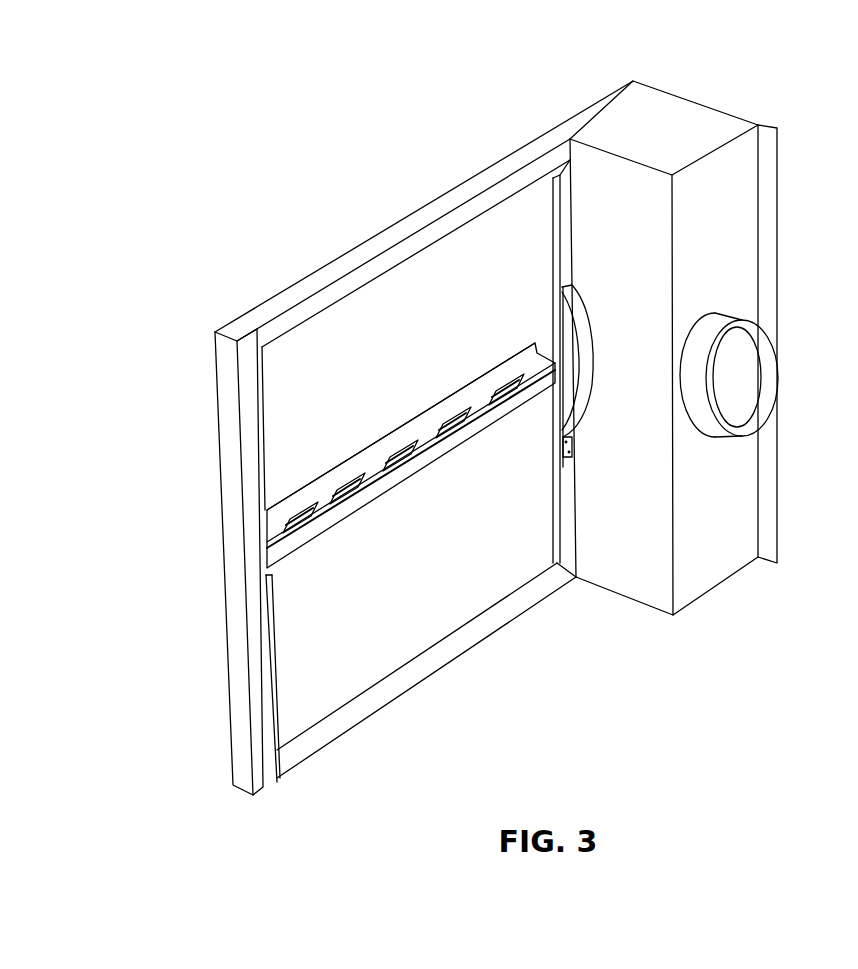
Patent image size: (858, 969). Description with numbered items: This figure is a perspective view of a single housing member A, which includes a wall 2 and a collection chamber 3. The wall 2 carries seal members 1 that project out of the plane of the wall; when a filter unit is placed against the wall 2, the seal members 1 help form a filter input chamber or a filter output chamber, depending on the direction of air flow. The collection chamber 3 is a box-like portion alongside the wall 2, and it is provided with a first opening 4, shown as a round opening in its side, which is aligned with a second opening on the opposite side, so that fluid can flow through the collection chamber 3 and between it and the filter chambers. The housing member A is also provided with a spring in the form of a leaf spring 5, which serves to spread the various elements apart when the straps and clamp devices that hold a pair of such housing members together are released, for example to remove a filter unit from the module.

The seal member 1 is at (438, 230).
The wall 2 is at (313, 378).
The collection chamber 3 is at (727, 370).
The first opening 4 is at (733, 427).
The leaf spring 5 is at (583, 333).
The housing member A is at (665, 127).